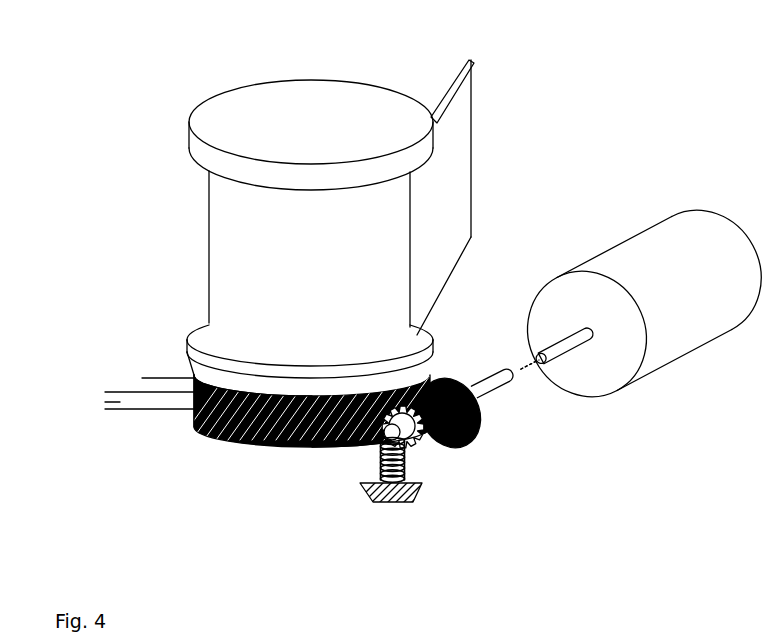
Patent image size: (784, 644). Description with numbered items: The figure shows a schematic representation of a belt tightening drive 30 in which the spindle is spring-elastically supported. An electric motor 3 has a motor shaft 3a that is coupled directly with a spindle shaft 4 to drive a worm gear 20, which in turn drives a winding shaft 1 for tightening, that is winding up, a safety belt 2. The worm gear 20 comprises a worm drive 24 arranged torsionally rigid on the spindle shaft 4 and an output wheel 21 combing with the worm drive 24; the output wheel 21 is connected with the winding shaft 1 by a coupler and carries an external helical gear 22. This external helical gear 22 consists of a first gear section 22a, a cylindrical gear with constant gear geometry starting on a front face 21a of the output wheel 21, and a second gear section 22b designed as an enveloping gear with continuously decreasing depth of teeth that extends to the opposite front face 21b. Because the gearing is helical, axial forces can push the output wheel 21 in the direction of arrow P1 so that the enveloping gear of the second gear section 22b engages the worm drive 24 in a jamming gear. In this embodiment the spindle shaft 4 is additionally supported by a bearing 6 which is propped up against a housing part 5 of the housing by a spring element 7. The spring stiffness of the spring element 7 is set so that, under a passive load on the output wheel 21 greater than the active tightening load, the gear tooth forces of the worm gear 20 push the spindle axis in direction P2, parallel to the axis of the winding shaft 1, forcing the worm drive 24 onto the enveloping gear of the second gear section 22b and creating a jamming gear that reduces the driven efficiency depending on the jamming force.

The winding shaft 1 is at (220, 223).
The safety belt 2 is at (466, 78).
The electric motor 3 is at (597, 283).
The motor shaft 3a is at (563, 352).
The spindle shaft 4 is at (480, 390).
The housing part 5 is at (411, 500).
The bearing 6 is at (415, 449).
The spring element 7 is at (383, 483).
The worm gear 20 is at (348, 455).
The output wheel 21 is at (266, 449).
The front face 21a is at (300, 398).
The opposite front face 21b is at (321, 447).
The external helical gear 22 is at (198, 428).
The first gear section 22a is at (149, 333).
The second gear section 22b is at (113, 373).
The worm drive 24 is at (461, 433).
The belt tightening drive 30 is at (565, 125).
The arrow P1 is at (312, 396).
The direction P2 is at (424, 467).